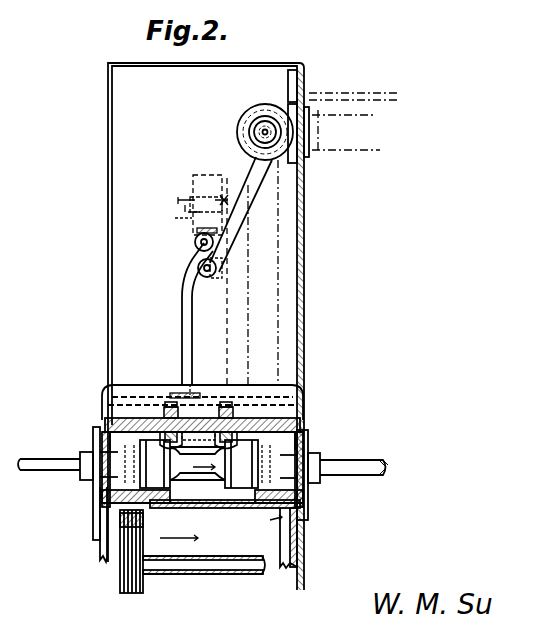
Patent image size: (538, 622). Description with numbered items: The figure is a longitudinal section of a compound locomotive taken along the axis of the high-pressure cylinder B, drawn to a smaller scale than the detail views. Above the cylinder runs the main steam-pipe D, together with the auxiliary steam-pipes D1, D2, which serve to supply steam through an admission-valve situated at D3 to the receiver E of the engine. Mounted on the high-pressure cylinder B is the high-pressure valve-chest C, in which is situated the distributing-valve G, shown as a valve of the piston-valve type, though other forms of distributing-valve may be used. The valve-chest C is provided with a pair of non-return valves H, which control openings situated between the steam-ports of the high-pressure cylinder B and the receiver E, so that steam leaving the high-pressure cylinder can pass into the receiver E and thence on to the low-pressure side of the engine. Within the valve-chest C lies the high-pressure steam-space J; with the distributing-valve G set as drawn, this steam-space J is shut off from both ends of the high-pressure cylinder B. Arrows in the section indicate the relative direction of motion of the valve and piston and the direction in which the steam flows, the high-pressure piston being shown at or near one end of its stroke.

The main steam-pipes D is at (252, 272).
The auxiliary steam-pipe D1 is at (240, 200).
The auxiliary steam-pipe D2 is at (192, 313).
The admission-valve D3 is at (200, 222).
The receiver E is at (202, 431).
The distributing-valve G is at (197, 464).
The non-return valve H is at (198, 427).
The high-pressure valve-chest C is at (198, 439).
The high-pressure steam-space J is at (203, 483).
The high-pressure cylinder B is at (201, 540).